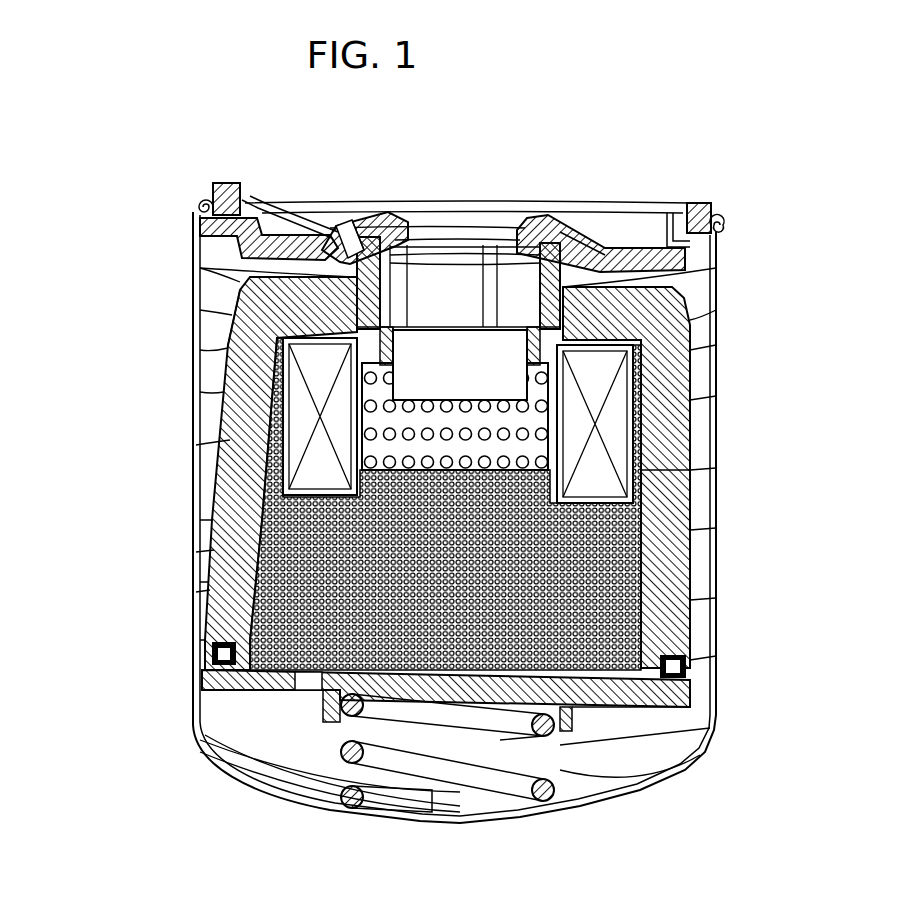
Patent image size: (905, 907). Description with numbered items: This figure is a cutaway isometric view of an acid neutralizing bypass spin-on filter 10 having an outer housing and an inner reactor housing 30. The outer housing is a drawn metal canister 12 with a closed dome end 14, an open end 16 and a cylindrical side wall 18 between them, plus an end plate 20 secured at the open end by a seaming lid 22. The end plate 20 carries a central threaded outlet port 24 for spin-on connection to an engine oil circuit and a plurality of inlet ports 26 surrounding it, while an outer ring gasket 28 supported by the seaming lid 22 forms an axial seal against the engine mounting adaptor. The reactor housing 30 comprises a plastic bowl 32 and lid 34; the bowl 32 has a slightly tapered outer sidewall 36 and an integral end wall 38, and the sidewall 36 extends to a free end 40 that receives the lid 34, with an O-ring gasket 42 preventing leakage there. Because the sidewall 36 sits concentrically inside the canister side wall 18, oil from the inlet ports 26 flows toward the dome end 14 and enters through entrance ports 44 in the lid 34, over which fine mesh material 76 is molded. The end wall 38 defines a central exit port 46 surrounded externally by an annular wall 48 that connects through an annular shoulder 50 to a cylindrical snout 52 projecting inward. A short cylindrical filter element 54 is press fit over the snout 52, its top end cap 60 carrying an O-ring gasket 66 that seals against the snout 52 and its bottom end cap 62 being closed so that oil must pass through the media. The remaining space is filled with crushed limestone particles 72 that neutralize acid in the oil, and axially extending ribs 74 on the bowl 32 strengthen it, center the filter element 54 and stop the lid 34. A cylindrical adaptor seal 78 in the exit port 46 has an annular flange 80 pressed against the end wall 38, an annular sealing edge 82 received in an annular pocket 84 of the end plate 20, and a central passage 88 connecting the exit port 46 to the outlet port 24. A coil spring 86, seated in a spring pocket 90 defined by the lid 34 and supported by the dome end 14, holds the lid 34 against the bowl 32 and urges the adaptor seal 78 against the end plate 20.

The filter 10 is at (100, 130).
The canister 12 is at (188, 508).
The closed dome end 14 is at (265, 790).
The open end 16 is at (228, 233).
The cylindrical side wall 18 is at (196, 447).
The end plate 20 is at (583, 233).
The seaming lid 22 is at (638, 245).
The outlet port 24 is at (455, 243).
The inlet ports 26 is at (314, 212).
The outer ring gasket 28 is at (704, 202).
The reactor housing 30 is at (212, 590).
The bowl 32 is at (212, 552).
The lid 34 is at (268, 690).
The outer sidewall 36 is at (235, 392).
The end wall 38 is at (690, 305).
The free end 40 is at (692, 695).
The O-ring gasket 42 is at (684, 672).
The entrance ports 44 is at (305, 690).
The exit port 46 is at (450, 328).
The annular wall 48 is at (250, 287).
The annular shoulder 50 is at (275, 332).
The snout 52 is at (612, 364).
The filter element 54 is at (647, 478).
The top end cap 60 is at (288, 350).
The bottom end cap 62 is at (280, 484).
The O-ring gasket 66 is at (650, 345).
The crushed limestone particles 72 is at (642, 553).
The axially extending ribs 74 is at (220, 652).
The fine mesh material 76 is at (625, 702).
The adaptor seal 78 is at (548, 242).
The annular flange 80 is at (345, 238).
The annular sealing edge 82 is at (380, 246).
The annular pocket 84 is at (398, 250).
The coil spring 86 is at (352, 810).
The central passage 88 is at (508, 272).
The spring pocket 90 is at (590, 712).